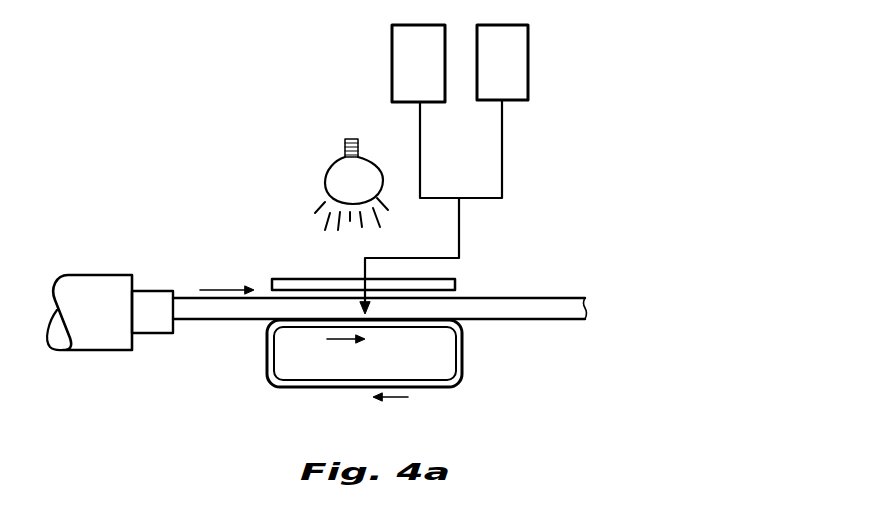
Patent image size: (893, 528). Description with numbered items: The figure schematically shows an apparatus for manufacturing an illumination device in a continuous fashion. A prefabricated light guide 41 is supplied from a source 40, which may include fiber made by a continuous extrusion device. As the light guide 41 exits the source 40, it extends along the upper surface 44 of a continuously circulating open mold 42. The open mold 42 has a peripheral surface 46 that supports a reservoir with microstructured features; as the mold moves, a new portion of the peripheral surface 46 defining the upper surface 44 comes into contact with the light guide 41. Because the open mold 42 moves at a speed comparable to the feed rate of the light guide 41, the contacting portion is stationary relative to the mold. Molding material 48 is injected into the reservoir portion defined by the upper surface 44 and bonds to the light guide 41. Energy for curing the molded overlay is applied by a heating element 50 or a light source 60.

The source 40 is at (102, 352).
The light guide 41 is at (190, 298).
The continuously circulating open mold 42 is at (268, 383).
The upper surface 44 is at (303, 318).
The peripheral surface 46 is at (268, 347).
The molding material 48 is at (460, 230).
The heating element 50 is at (456, 279).
The light source 60 is at (330, 168).